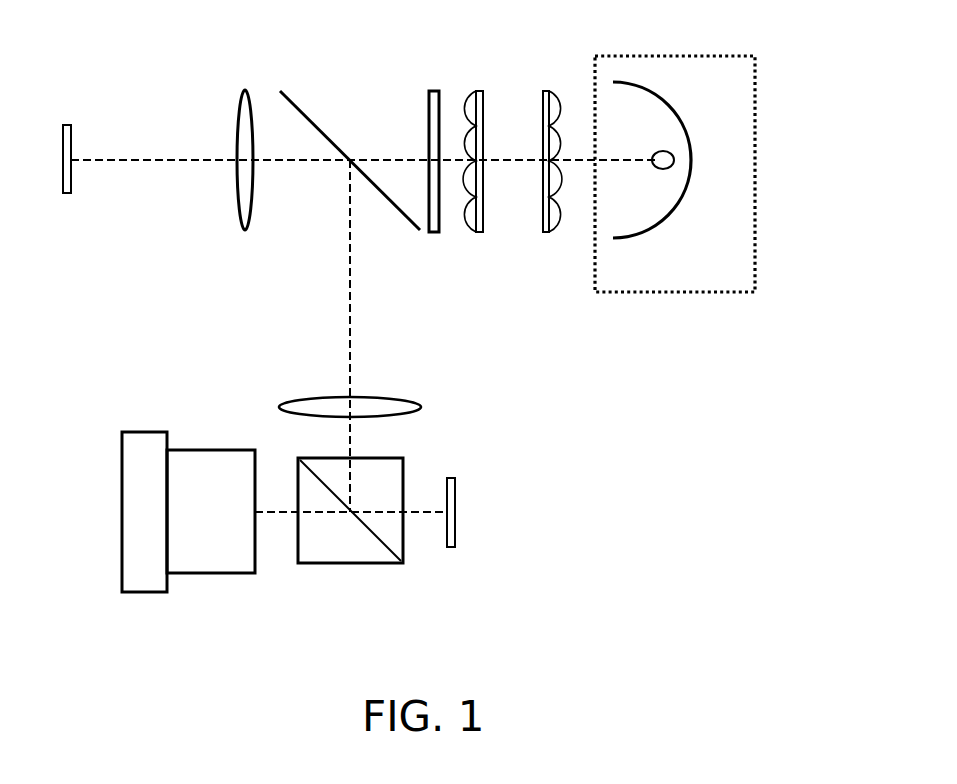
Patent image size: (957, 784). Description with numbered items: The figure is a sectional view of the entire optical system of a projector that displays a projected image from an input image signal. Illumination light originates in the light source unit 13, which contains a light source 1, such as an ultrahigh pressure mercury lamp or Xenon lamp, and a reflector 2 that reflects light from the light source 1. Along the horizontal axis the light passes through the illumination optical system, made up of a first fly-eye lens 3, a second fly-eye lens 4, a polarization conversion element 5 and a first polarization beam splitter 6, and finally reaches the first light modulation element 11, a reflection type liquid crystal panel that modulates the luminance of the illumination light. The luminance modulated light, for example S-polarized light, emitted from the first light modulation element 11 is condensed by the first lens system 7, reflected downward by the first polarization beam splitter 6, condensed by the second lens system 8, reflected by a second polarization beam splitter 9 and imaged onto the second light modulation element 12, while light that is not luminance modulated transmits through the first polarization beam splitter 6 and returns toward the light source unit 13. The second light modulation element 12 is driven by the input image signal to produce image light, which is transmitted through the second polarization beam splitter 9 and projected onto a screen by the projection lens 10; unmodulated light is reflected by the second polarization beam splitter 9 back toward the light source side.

The light source 1 is at (665, 168).
The reflector 2 is at (640, 238).
The first fly-eye lens 3 is at (552, 95).
The second fly-eye lens 4 is at (483, 95).
The polarization conversion element 5 is at (440, 95).
The first polarization beam splitter 6 is at (287, 95).
The first lens system 7 is at (242, 103).
The second lens system 8 is at (397, 402).
The second polarization beam splitter 9 is at (367, 563).
The projection lens 10 is at (213, 573).
The first light modulation element 11 is at (71, 127).
The second light modulation element 12 is at (455, 537).
The light source unit 13 is at (755, 258).